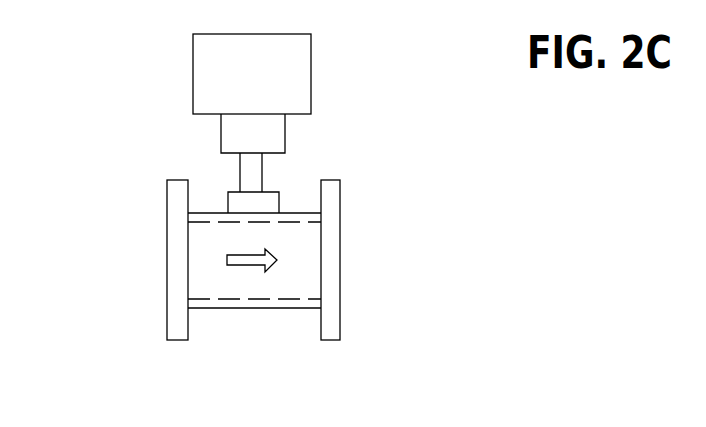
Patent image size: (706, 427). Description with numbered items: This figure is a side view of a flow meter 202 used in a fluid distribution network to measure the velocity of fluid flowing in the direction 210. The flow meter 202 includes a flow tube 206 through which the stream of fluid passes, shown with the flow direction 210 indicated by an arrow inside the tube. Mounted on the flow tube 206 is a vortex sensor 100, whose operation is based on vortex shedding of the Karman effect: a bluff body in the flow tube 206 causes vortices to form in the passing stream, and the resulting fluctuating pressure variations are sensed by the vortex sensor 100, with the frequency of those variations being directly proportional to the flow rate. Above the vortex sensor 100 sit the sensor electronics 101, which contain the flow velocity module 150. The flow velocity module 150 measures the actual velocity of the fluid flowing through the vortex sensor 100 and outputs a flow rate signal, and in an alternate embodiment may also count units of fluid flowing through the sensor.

The vortex sensor 100 is at (293, 188).
The sensor electronics 101 is at (324, 69).
The flow velocity module 150 is at (267, 92).
The flow meter 202 is at (424, 260).
The flow tube 206 is at (207, 210).
The direction 210 is at (238, 287).